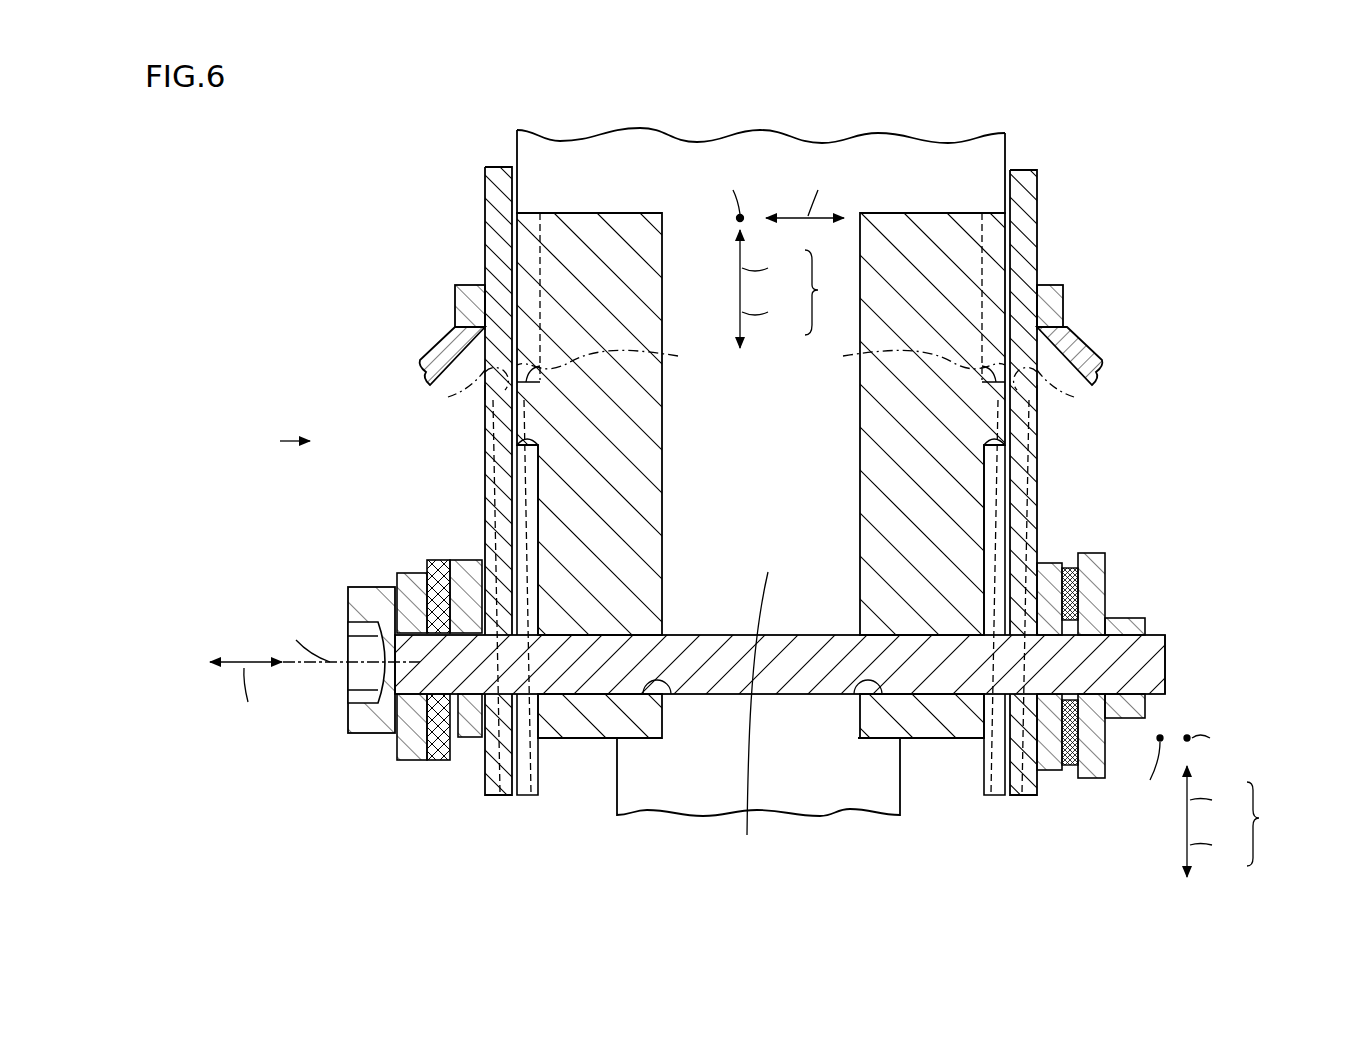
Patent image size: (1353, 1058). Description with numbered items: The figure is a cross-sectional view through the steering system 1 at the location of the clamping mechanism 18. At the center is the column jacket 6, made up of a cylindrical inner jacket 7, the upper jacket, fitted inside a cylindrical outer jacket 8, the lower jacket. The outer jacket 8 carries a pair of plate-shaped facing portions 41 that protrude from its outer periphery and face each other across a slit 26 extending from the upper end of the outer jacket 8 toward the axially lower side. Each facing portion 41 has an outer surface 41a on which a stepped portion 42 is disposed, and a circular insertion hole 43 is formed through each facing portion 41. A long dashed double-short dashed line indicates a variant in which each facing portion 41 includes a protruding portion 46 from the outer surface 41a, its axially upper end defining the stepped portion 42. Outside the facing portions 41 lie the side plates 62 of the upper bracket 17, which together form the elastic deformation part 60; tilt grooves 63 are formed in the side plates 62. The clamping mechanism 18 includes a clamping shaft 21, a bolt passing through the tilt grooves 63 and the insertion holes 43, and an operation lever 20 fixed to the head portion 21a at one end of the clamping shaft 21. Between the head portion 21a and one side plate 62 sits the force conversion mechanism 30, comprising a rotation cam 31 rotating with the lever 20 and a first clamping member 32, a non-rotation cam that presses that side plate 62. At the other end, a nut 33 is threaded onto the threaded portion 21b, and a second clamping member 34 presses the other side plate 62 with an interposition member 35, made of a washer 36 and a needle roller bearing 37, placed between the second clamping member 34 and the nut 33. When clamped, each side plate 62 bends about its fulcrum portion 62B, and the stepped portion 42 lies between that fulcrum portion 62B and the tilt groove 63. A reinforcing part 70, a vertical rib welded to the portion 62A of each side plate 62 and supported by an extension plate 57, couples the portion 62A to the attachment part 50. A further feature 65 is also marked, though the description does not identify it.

The steering system 1 is at (1062, 138).
The column jacket 6 is at (761, 504).
The inner jacket 7 is at (855, 816).
The outer jacket 8 is at (576, 211).
The upper bracket 17 is at (676, 478).
The clamping mechanism 18 is at (752, 687).
The operation lever 20 is at (400, 580).
The clamping shaft 21 is at (758, 687).
The head portion 21a is at (350, 735).
The threaded portion 21b is at (1158, 685).
The slit 26 is at (766, 866).
The force conversion mechanism 30 is at (402, 626).
The rotation cam 31 is at (438, 566).
The first clamping member 32 is at (470, 566).
The nut 33 is at (1145, 628).
The second clamping member 34 is at (1046, 565).
The interposition member 35 is at (1139, 665).
The washer 36 is at (1080, 590).
The needle roller bearing 37 is at (1096, 612).
The facing portions 41 is at (676, 461).
The outer surface 41a is at (514, 408).
The stepped portion 42 is at (526, 440).
The insertion hole 43 is at (671, 694).
The protruding portion 46 is at (761, 361).
The attachment part 50 is at (762, 359).
The extension plate 57 is at (425, 372).
The elastic deformation part 60 is at (676, 478).
The side plates 62 is at (483, 180).
The portion of the side plate 62A is at (500, 292).
The fulcrum portion 62B is at (491, 393).
The tilt grooves 63 is at (478, 762).
The connection portion 65 is at (446, 416).
The reinforcing part 70 is at (470, 296).